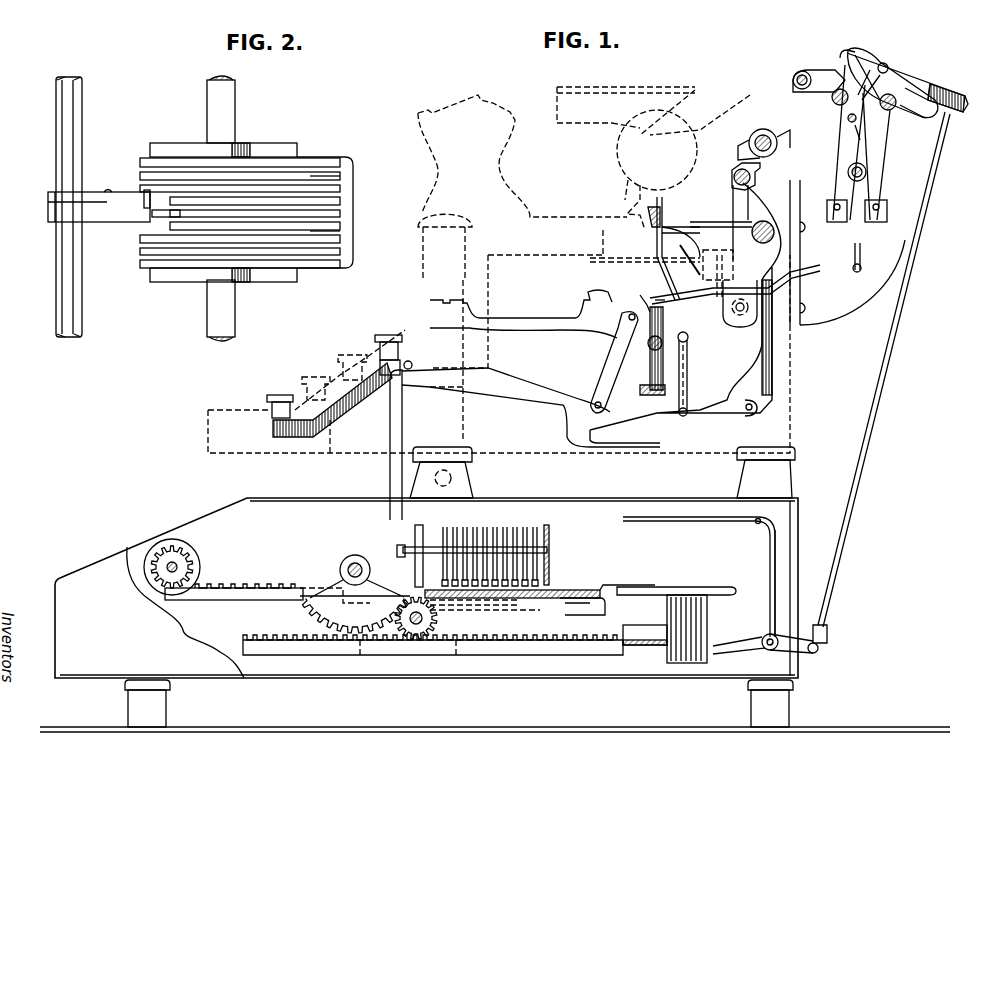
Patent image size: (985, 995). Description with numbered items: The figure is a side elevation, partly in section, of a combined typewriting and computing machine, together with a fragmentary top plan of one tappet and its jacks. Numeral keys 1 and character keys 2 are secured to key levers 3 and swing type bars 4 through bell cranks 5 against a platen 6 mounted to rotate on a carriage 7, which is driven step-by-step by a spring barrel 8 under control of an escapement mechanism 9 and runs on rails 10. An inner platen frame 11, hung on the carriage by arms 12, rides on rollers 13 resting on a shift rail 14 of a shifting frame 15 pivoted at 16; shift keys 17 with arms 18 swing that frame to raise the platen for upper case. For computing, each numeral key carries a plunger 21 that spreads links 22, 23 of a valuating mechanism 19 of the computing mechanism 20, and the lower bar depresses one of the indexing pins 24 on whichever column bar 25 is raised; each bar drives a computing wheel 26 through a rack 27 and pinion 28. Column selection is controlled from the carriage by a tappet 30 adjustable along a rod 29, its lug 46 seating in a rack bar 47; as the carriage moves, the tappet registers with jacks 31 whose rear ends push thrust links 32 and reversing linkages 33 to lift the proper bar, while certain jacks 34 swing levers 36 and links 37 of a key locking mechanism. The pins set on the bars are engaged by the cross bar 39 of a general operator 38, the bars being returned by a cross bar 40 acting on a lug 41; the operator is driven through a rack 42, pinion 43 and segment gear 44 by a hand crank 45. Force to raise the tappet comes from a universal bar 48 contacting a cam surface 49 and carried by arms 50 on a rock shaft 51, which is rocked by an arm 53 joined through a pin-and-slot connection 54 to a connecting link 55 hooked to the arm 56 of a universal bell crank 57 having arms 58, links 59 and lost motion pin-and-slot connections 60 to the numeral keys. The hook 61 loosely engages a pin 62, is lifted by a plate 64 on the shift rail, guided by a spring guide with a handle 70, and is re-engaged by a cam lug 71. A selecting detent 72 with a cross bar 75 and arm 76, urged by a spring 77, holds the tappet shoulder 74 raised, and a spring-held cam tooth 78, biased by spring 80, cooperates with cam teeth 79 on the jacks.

In FIG. 1, the numeral keys 1 is at (386, 334).
In FIG. 1, the character keys 2 is at (350, 354).
In FIG. 1, the key levers 3 is at (520, 388).
In FIG. 1, the type bars 4 is at (528, 316).
In FIG. 1, the bell cranks 5 is at (603, 362).
In FIG. 1, the platen 6 is at (617, 152).
In FIG. 1, the carriage 7 is at (676, 85).
In FIG. 1, the spring barrel 8 is at (769, 252).
In FIG. 1, the escapement mechanism 9 is at (712, 186).
In FIG. 1, the rails 10 is at (760, 172).
In FIG. 1, the platen frame 11 is at (688, 100).
In FIG. 1, the arms 12 is at (710, 107).
In FIG. 1, the rollers 13 is at (656, 203).
In FIG. 1, the shift rail 14 is at (681, 212).
In FIG. 1, the shifting frame 15 is at (757, 258).
In FIG. 1, the pivot 16 is at (772, 220).
In FIG. 1, the shift keys 17 is at (278, 395).
In FIG. 1, the arm 18 is at (758, 368).
In FIG. 1, the valuating mechanism 19 is at (550, 530).
In FIG. 1, the computing mechanism 20 is at (270, 588).
In FIG. 1, the plunger 21 is at (402, 440).
In FIG. 1, the link 22 is at (470, 528).
In FIG. 1, the lower bar 23 is at (490, 585).
In FIG. 1, the indexing pins 24 is at (510, 588).
In FIG. 1, the column bars 25 is at (648, 585).
In FIG. 1, the computing wheels 26 is at (195, 568).
In FIG. 1, the rack 27 is at (245, 586).
In FIG. 1, the pinion 28 is at (190, 555).
In FIG. 2, the rod 29 is at (80, 118).
In FIG. 1, the rod 29 is at (802, 72).
In FIG. 2, the tappet 30 is at (106, 215).
In FIG. 1, the tappet 30 is at (818, 70).
In FIG. 2, the jacks 31 is at (308, 195).
In FIG. 1, the jacks 31 is at (942, 86).
In FIG. 1, the thrust links 32 is at (853, 478).
In FIG. 1, the linkages 33 is at (752, 634).
In FIG. 2, the jacks 34 is at (345, 183).
In FIG. 1, the levers 36 is at (777, 555).
In FIG. 1, the links 37 is at (740, 523).
In FIG. 1, the general operator 38 is at (548, 600).
In FIG. 1, the cross bar 39 is at (580, 608).
In FIG. 1, the cross bar 40 is at (432, 582).
In FIG. 1, the lug 41 is at (380, 585).
In FIG. 1, the rack 42 is at (265, 640).
In FIG. 1, the pinion 43 is at (413, 625).
In FIG. 1, the segment gear 44 is at (345, 575).
In FIG. 1, the hand crank 45 is at (452, 478).
In FIG. 2, the lug 46 is at (162, 216).
In FIG. 1, the lug 46 is at (867, 69).
In FIG. 1, the rack bar 47 is at (845, 112).
In FIG. 1, the universal bar 48 is at (913, 121).
In FIG. 1, the cam surface 49 is at (887, 78).
In FIG. 1, the arms 50 is at (866, 165).
In FIG. 1, the rock shaft 51 is at (868, 178).
In FIG. 1, the arm 53 is at (887, 220).
In FIG. 1, the pin-and-slot connection 54 is at (862, 268).
In FIG. 1, the connecting link 55 is at (800, 287).
In FIG. 1, the arm 56 is at (642, 351).
In FIG. 1, the universal bell crank 57 is at (668, 340).
In FIG. 1, the arms 58 is at (688, 355).
In FIG. 1, the links 59 is at (688, 370).
In FIG. 1, the pin-and-slot connections 60 is at (688, 337).
In FIG. 1, the hook 61 is at (638, 293).
In FIG. 1, the pin 62 is at (657, 288).
In FIG. 1, the plate 64 is at (655, 246).
In FIG. 1, the handle 70 is at (709, 277).
In FIG. 1, the cam lug 71 is at (686, 264).
In FIG. 1, the selecting detent 72 is at (897, 102).
In FIG. 1, the shoulder 74 is at (879, 65).
In FIG. 1, the cross bar 75 is at (889, 74).
In FIG. 1, the arm 76 is at (842, 129).
In FIG. 1, the spring 77 is at (862, 140).
In FIG. 2, the cam tooth 78 is at (143, 207).
In FIG. 1, the cam tooth 78 is at (832, 98).
In FIG. 1, the cam teeth 79 is at (847, 41).
In FIG. 2, the spring 80 is at (114, 190).